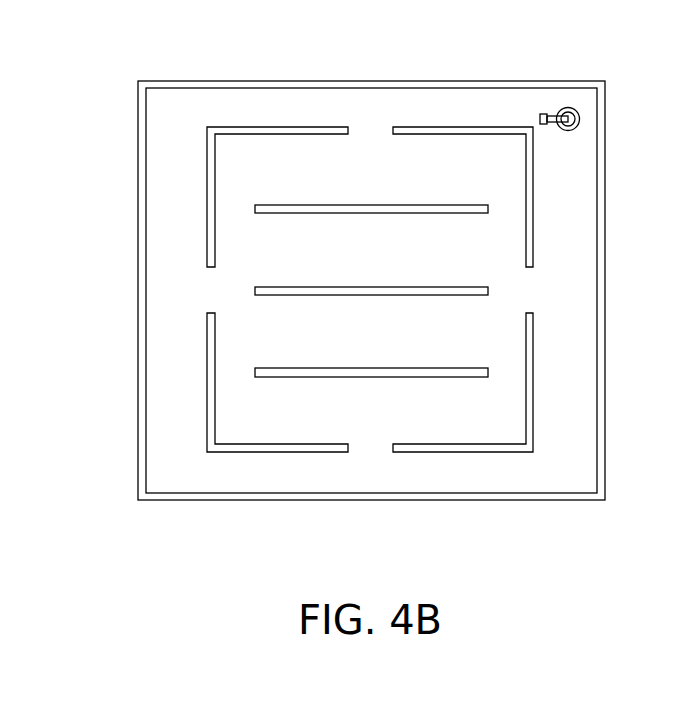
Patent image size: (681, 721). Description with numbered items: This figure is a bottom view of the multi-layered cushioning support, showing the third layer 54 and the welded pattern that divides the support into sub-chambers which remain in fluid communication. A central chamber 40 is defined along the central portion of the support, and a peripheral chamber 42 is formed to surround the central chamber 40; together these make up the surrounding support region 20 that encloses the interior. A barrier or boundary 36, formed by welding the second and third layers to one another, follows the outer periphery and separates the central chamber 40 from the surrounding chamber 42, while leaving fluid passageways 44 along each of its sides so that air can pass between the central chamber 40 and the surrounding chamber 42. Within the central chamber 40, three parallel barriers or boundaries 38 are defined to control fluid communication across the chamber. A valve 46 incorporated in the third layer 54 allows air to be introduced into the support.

The surrounding support region 20 is at (371, 295).
The barrier or boundary 36 is at (478, 127).
The barrier or boundary 38 is at (333, 205).
The central chamber 40 is at (462, 157).
The peripheral chamber 42 is at (325, 105).
The fluid passageway 44 is at (378, 115).
The valve 46 is at (570, 110).
The third layer 54 is at (557, 475).